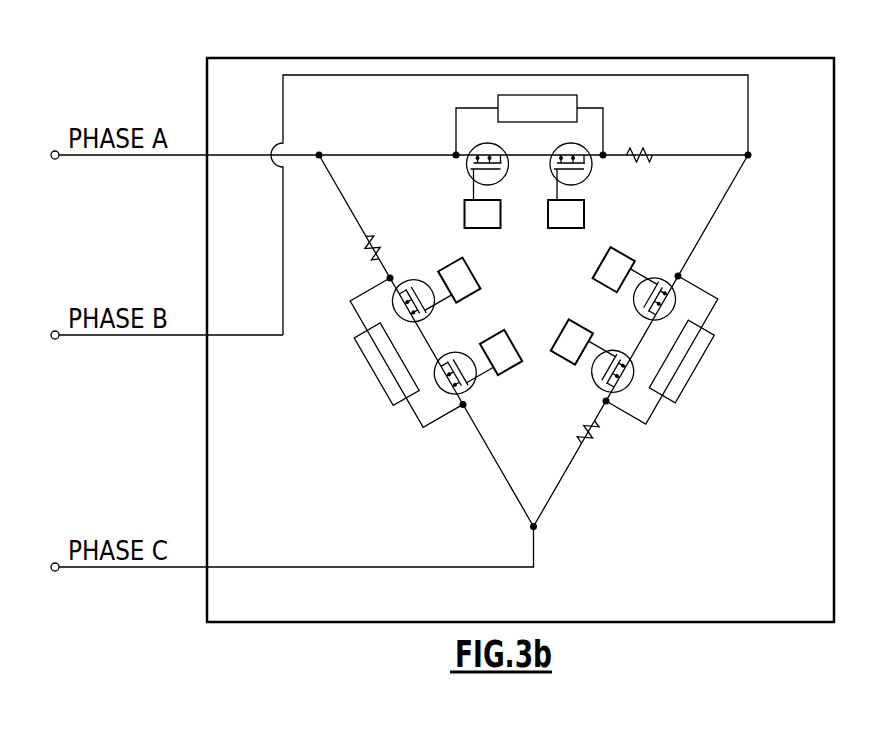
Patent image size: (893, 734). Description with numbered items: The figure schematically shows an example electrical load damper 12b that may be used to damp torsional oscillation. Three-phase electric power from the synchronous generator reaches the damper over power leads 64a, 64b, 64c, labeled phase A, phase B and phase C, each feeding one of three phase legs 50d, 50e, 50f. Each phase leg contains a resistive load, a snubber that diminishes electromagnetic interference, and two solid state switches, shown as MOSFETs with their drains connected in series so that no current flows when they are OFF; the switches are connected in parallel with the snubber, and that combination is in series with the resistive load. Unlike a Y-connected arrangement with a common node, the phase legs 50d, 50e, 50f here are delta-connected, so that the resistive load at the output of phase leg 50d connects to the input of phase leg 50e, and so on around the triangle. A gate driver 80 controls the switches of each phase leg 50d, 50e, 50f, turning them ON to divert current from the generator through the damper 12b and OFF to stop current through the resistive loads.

The load damper 12b is at (176, 60).
The phase leg 50d is at (572, 137).
The phase leg 50e is at (675, 350).
The phase leg 50f is at (395, 348).
The power lead 64a is at (55, 159).
The power lead 64b is at (55, 339).
The power lead 64c is at (55, 571).
The gate driver 80 is at (574, 231).